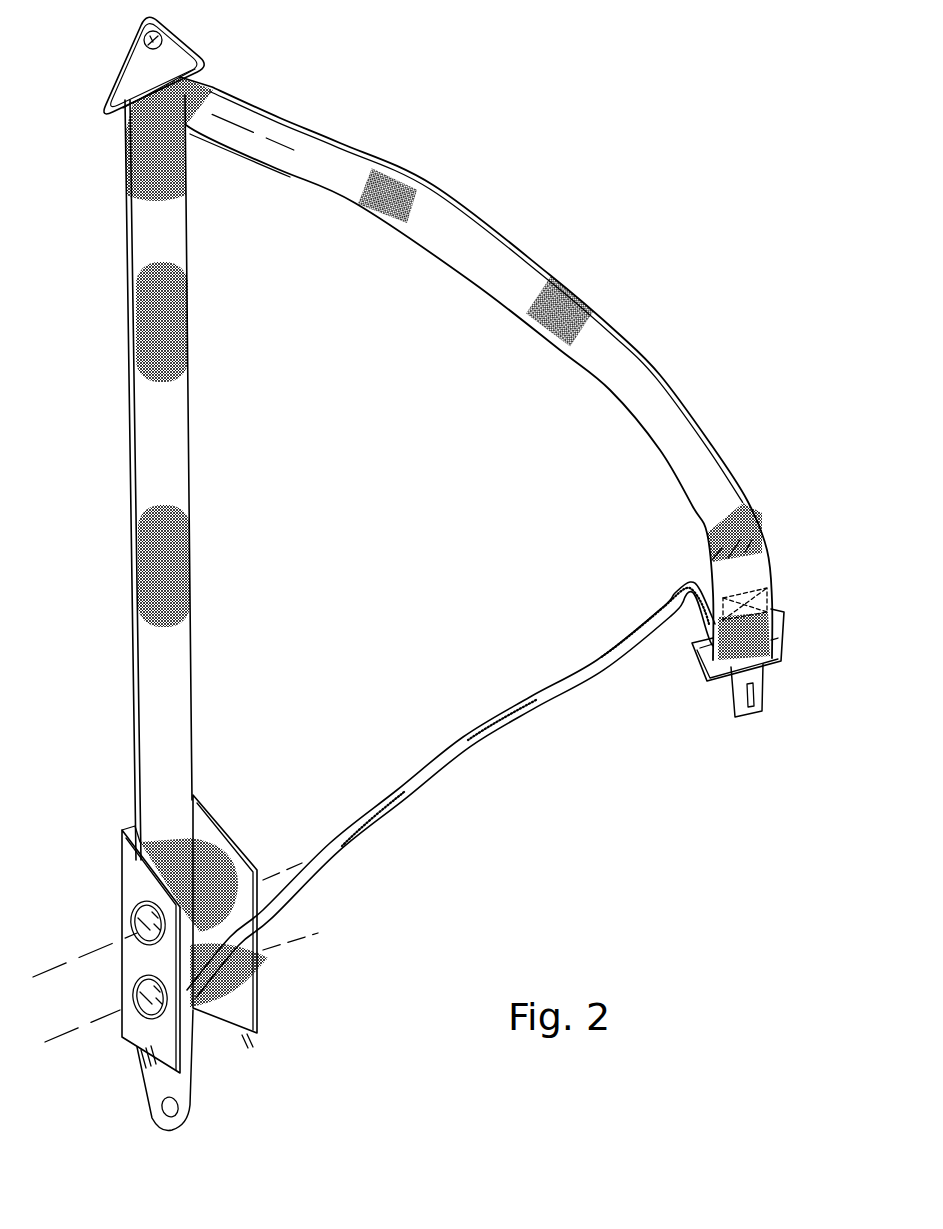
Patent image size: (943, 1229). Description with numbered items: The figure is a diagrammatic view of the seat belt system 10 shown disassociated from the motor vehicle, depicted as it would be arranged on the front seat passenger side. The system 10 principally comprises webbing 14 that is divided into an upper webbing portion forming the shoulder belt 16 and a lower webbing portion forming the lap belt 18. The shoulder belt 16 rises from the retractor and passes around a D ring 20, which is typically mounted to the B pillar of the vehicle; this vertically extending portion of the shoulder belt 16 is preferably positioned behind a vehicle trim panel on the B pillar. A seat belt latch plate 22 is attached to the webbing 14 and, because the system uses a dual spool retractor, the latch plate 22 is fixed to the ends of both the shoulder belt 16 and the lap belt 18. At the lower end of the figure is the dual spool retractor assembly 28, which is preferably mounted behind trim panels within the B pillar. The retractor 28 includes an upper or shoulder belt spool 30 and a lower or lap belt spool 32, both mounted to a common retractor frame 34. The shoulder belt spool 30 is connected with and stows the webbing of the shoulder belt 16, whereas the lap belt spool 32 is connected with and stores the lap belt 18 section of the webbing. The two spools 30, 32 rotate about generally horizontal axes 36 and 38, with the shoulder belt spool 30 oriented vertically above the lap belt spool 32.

The seat belt system 10 is at (614, 193).
The webbing 14 is at (778, 597).
The shoulder belt 16 is at (758, 524).
The lap belt 18 is at (358, 832).
The D ring 20 is at (116, 67).
The seat belt latch plate 22 is at (787, 627).
The dual spool retractor assembly 28 is at (217, 817).
The shoulder belt spool 30 is at (147, 928).
The lap belt spool 32 is at (147, 997).
The retractor frame 34 is at (260, 1016).
The axis 36 is at (50, 973).
The axis 38 is at (53, 1040).